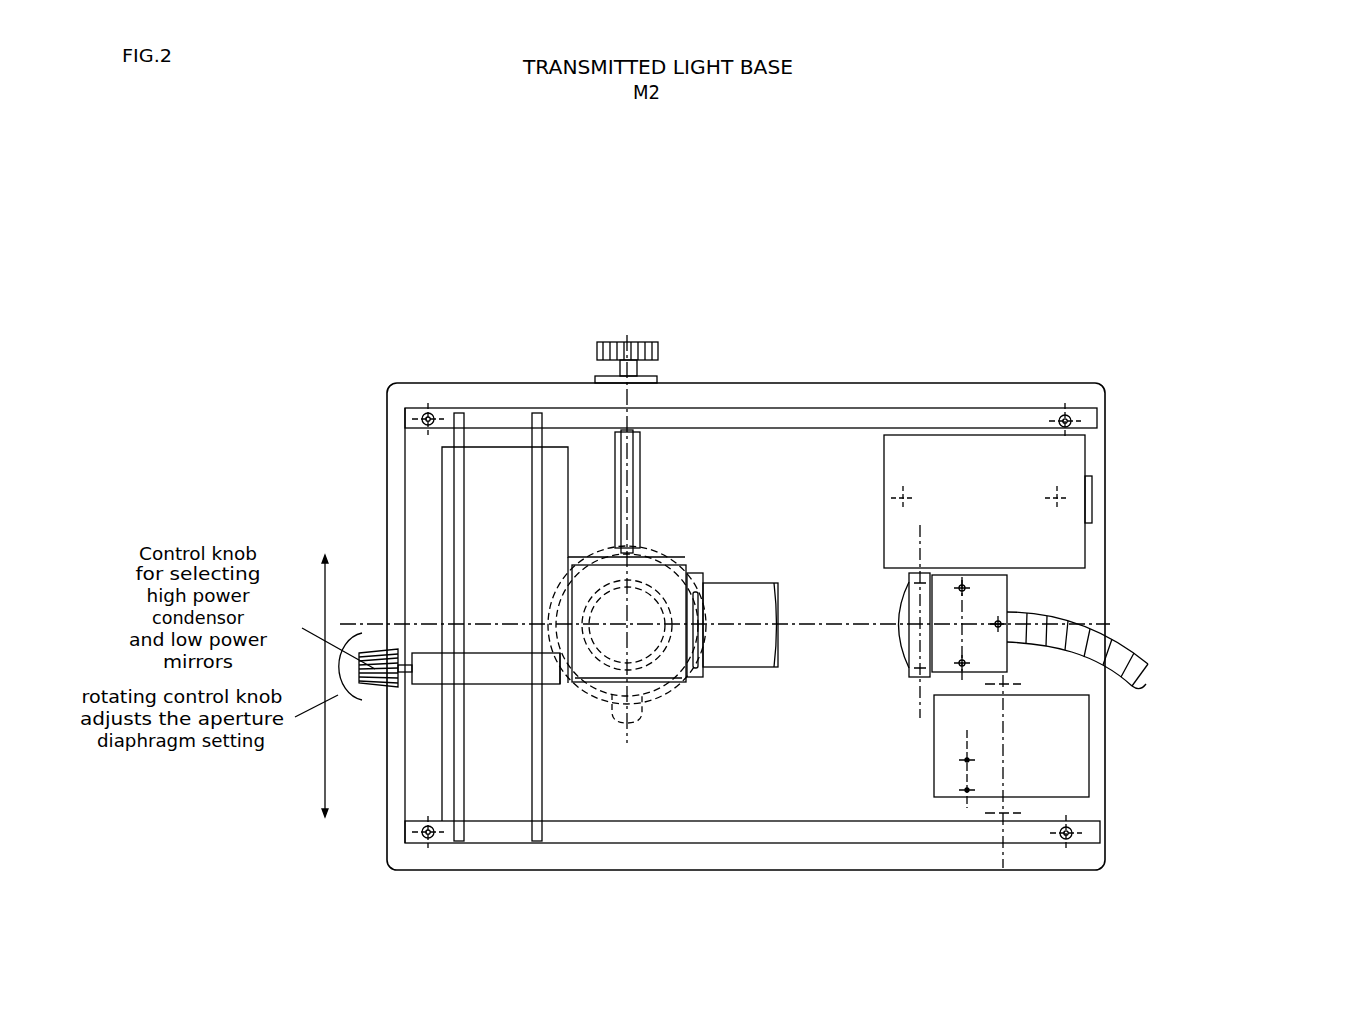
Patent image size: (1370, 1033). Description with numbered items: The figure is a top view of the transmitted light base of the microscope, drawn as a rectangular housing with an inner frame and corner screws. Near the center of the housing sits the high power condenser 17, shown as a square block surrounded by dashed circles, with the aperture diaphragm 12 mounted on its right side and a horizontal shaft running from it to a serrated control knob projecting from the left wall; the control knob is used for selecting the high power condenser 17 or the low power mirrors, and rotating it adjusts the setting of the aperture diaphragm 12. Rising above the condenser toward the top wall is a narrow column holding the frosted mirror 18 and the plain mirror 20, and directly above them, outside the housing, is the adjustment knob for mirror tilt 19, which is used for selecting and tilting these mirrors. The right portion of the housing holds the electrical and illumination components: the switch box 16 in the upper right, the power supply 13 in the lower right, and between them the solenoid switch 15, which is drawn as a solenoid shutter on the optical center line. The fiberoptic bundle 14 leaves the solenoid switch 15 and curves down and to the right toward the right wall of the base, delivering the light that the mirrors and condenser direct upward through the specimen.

The aperture diaphragm 12 is at (697, 675).
The power supply 13 is at (1011, 771).
The fiberoptic bundle 14 is at (1103, 632).
The solenoid switch 15 is at (996, 600).
The switch box 16 is at (988, 576).
The high power condenser 17 is at (655, 603).
The frosted mirror 18 is at (637, 482).
The adjustment knob for mirror tilt 19 is at (638, 343).
The plain mirror 20 is at (615, 455).